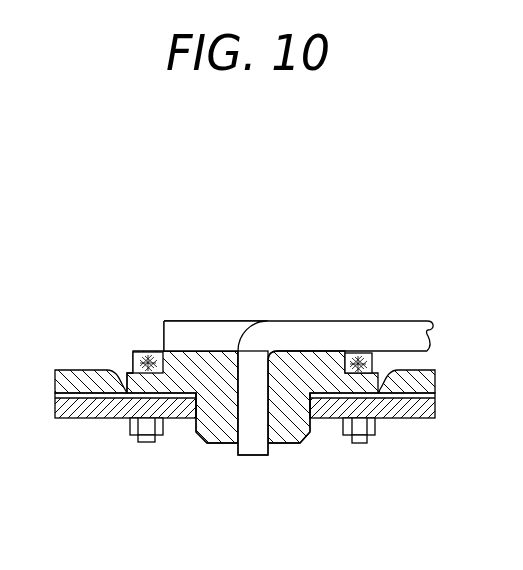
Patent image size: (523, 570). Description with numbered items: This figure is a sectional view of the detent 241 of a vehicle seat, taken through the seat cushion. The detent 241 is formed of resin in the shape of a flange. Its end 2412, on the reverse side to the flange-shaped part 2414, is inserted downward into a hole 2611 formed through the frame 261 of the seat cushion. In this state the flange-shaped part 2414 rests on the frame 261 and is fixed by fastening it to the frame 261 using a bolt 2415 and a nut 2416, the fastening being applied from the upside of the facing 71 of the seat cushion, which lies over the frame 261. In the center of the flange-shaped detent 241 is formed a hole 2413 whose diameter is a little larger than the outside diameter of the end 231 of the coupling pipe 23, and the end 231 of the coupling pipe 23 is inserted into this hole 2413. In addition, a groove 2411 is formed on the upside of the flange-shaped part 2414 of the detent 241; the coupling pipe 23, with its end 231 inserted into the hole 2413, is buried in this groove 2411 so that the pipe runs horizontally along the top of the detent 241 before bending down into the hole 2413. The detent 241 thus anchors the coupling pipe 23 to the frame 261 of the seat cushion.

The facing 71 is at (78, 371).
The coupling pipe 23 is at (373, 321).
The end of coupling pipe 231 is at (253, 448).
The detent 241 is at (187, 351).
The groove 2411 is at (220, 328).
The end of detent 2412 is at (195, 425).
The hole 2413 is at (240, 404).
The flange-shaped part 2414 is at (127, 375).
The bolt 2415 is at (147, 352).
The nut 2416 is at (131, 441).
The frame 261 is at (80, 418).
The hole of frame 2611 is at (303, 415).